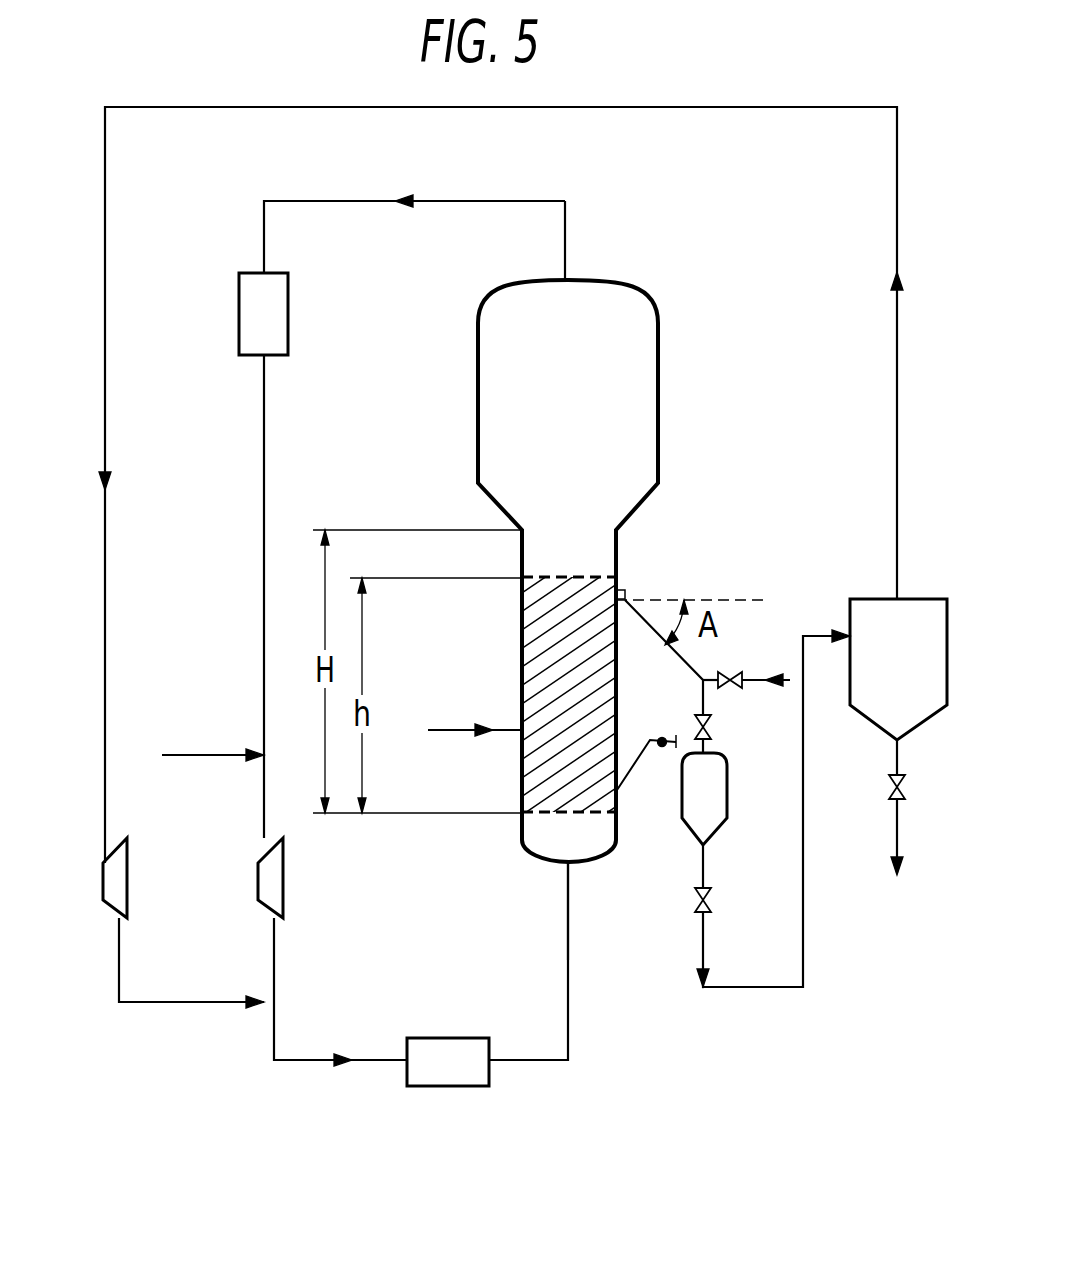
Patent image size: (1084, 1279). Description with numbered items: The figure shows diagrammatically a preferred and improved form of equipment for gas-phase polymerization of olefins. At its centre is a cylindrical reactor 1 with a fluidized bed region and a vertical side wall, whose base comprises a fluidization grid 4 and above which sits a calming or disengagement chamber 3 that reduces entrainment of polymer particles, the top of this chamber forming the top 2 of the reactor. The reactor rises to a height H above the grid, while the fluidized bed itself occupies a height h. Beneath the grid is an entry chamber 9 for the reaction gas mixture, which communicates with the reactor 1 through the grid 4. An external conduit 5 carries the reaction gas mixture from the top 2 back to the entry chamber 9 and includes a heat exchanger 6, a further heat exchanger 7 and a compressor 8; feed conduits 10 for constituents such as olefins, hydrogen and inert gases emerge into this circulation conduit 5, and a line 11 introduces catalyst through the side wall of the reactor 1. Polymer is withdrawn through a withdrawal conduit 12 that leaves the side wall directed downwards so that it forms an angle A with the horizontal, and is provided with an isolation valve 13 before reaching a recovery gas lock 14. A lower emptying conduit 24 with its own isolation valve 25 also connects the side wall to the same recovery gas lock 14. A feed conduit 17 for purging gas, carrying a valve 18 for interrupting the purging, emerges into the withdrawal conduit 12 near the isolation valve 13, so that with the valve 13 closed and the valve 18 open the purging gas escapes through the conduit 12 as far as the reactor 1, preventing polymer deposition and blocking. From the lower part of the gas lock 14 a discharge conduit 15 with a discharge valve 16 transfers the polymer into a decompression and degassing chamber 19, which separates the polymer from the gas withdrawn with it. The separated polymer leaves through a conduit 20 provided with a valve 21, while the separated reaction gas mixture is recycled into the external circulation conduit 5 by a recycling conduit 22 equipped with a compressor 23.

The cylindrical reactor 1 is at (521, 645).
The top 2 is at (632, 292).
The disengagement chamber 3 is at (658, 398).
The fluidization grid 4 is at (530, 814).
The external conduit 5 is at (338, 200).
The heat exchanger 6 is at (239, 308).
The heat exchanger 7 is at (435, 1087).
The compressor 8 is at (283, 882).
The entry chamber 9 is at (540, 862).
The feed conduit 10 is at (200, 754).
The line 11 is at (445, 729).
The withdrawal conduit 12 is at (687, 663).
The isolation valve 13 is at (707, 733).
The recovery gas lock 14 is at (725, 805).
The discharge conduit 15 is at (703, 942).
The discharge valve 16 is at (712, 900).
The feed conduit 17 is at (753, 682).
The valve 18 is at (742, 678).
The decompression and degassing chamber 19 is at (865, 598).
The conduit 20 is at (893, 828).
The valve 21 is at (888, 794).
The recycling conduit 22 is at (897, 352).
The compressor 23 is at (127, 882).
The emptying conduit 24 is at (636, 760).
The isolation valve 25 is at (672, 752).